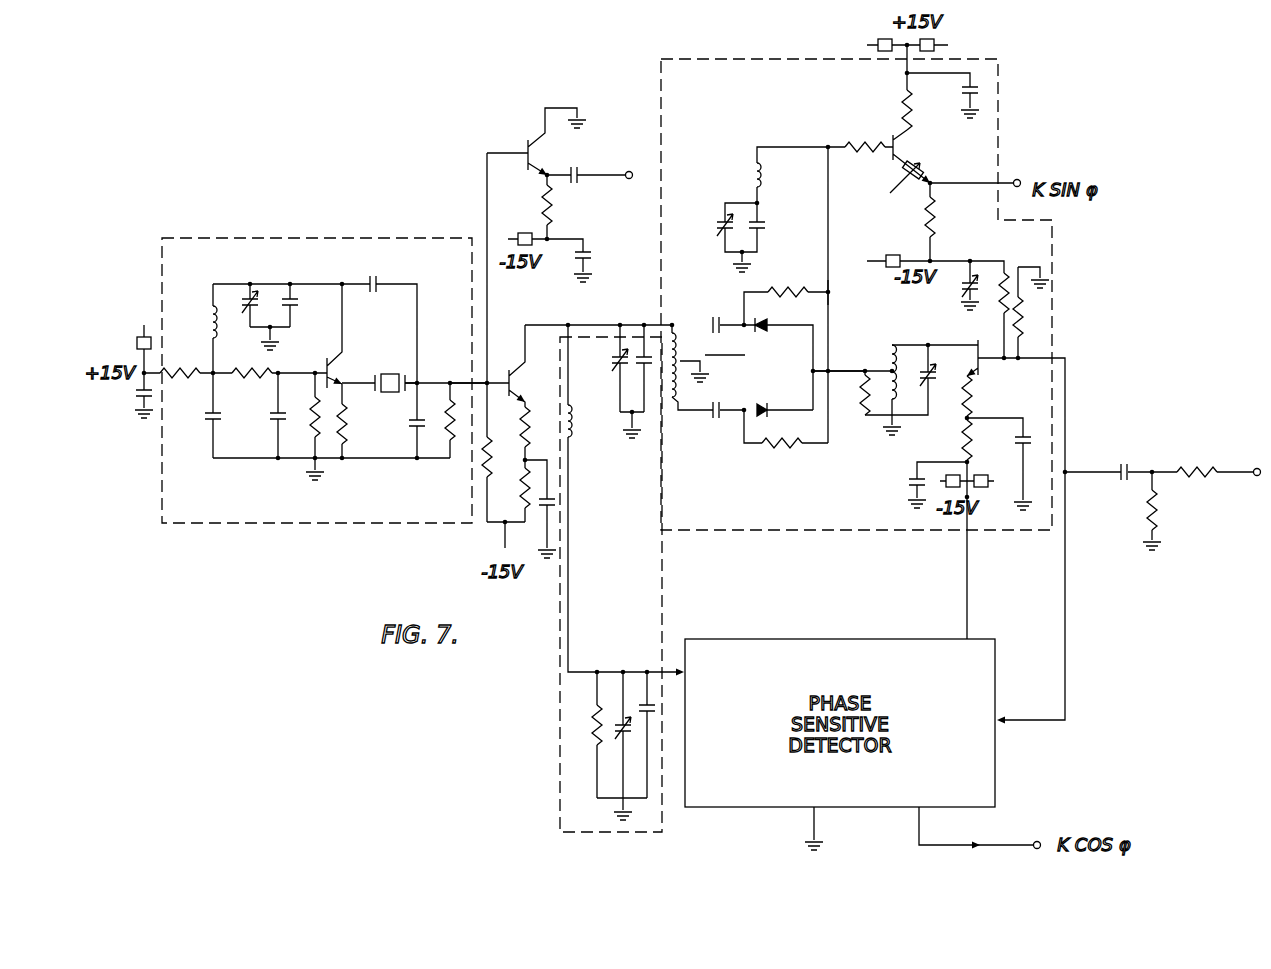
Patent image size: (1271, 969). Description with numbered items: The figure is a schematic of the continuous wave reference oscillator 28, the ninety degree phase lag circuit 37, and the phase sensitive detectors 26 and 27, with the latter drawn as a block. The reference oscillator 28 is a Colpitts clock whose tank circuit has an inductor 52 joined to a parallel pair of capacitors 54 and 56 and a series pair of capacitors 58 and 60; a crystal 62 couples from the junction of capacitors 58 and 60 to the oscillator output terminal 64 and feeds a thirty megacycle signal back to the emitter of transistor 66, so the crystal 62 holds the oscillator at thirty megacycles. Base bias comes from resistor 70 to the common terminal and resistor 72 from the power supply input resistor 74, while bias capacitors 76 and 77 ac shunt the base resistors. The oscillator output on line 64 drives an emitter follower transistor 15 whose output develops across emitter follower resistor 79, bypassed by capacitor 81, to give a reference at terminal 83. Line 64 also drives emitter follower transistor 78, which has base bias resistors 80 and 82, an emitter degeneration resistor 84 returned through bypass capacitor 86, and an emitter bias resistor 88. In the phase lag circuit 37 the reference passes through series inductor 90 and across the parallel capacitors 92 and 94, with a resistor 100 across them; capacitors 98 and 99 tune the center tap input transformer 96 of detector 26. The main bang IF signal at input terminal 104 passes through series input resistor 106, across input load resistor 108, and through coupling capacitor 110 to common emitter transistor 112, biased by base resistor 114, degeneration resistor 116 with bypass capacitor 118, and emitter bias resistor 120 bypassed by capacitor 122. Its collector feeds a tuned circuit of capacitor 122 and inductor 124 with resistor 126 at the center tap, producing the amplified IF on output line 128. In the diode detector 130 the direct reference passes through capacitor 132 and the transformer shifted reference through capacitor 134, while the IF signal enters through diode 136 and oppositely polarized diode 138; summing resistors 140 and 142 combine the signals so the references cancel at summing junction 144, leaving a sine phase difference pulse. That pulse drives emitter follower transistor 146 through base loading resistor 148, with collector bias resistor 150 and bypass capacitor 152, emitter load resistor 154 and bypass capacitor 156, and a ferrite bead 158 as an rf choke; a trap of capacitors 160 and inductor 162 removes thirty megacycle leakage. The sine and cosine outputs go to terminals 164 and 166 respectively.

The transistor 15 is at (528, 145).
The phase sensitive detector 26 is at (778, 65).
The phase sensitive detector 27 is at (720, 795).
The reference oscillator 28 is at (306, 246).
The 90° phase lag circuit 37 is at (557, 665).
The inductor 52 is at (209, 320).
The capacitor 54 is at (256, 294).
The capacitor 56 is at (293, 298).
The capacitor 58 is at (379, 279).
The capacitor 60 is at (408, 431).
The crystal 62 is at (392, 372).
The oscillator output terminal 64 is at (472, 380).
The transistor 66 is at (338, 371).
The resistor 70 is at (306, 432).
The resistor 72 is at (236, 370).
The electrical power supply input resistor 74 is at (179, 380).
The bias capacitor 76 is at (210, 421).
The bias capacitor 77 is at (270, 421).
The emitter follower transistor 78 is at (513, 381).
The emitter follower resistor 79 is at (552, 211).
The base bias resistor 80 is at (448, 441).
The bypass capacitor 81 is at (590, 251).
The base bias resistor 82 is at (483, 470).
The terminal 83 is at (629, 171).
The emitter degeneration resistor 84 is at (532, 429).
The bypass capacitor 86 is at (558, 503).
The emitter bias resistor 88 is at (535, 491).
The series inductor 90 is at (574, 426).
The capacitor 92 is at (605, 736).
The capacitor 94 is at (646, 719).
The input transformer 96 is at (670, 406).
The capacitor 98 is at (611, 369).
The capacitor 99 is at (640, 371).
The resistor 100 is at (590, 729).
The input terminal 104 is at (1256, 478).
The series input resistor 106 is at (1185, 465).
The input load resistor 108 is at (1163, 506).
The series coupling capacitor 110 is at (1127, 462).
The common emitter transistor 112 is at (981, 350).
The base bias resistor 114 is at (1020, 328).
The degeneration resistor 116 is at (973, 394).
The bypass capacitor 118 is at (1033, 436).
The emitter bias resistor 120 is at (962, 438).
The capacitor 122 is at (934, 367).
The inductor 124 is at (901, 345).
The resistor 126 is at (862, 400).
The output line 128 is at (843, 367).
The phase sensitive diode detector 130 is at (725, 345).
The capacitor 132 is at (717, 316).
The capacitor 134 is at (720, 402).
The diode 136 is at (762, 333).
The diode 138 is at (767, 404).
The summing resistor 140 is at (782, 290).
The summing resistor 142 is at (782, 447).
The summing junction 144 is at (832, 292).
The emitter follower transistor 146 is at (905, 149).
The base loading resistor 148 is at (868, 160).
The collector bias resistor 150 is at (900, 101).
The bypass capacitor 152 is at (985, 91).
The emitter load resistor 154 is at (938, 229).
The bypass capacitor 156 is at (979, 278).
The bead of ferrite material 158 is at (904, 182).
The capacitors 160 is at (731, 212).
The inductor 162 is at (766, 178).
The input terminal 164 is at (1021, 178).
The input terminal 166 is at (1037, 851).